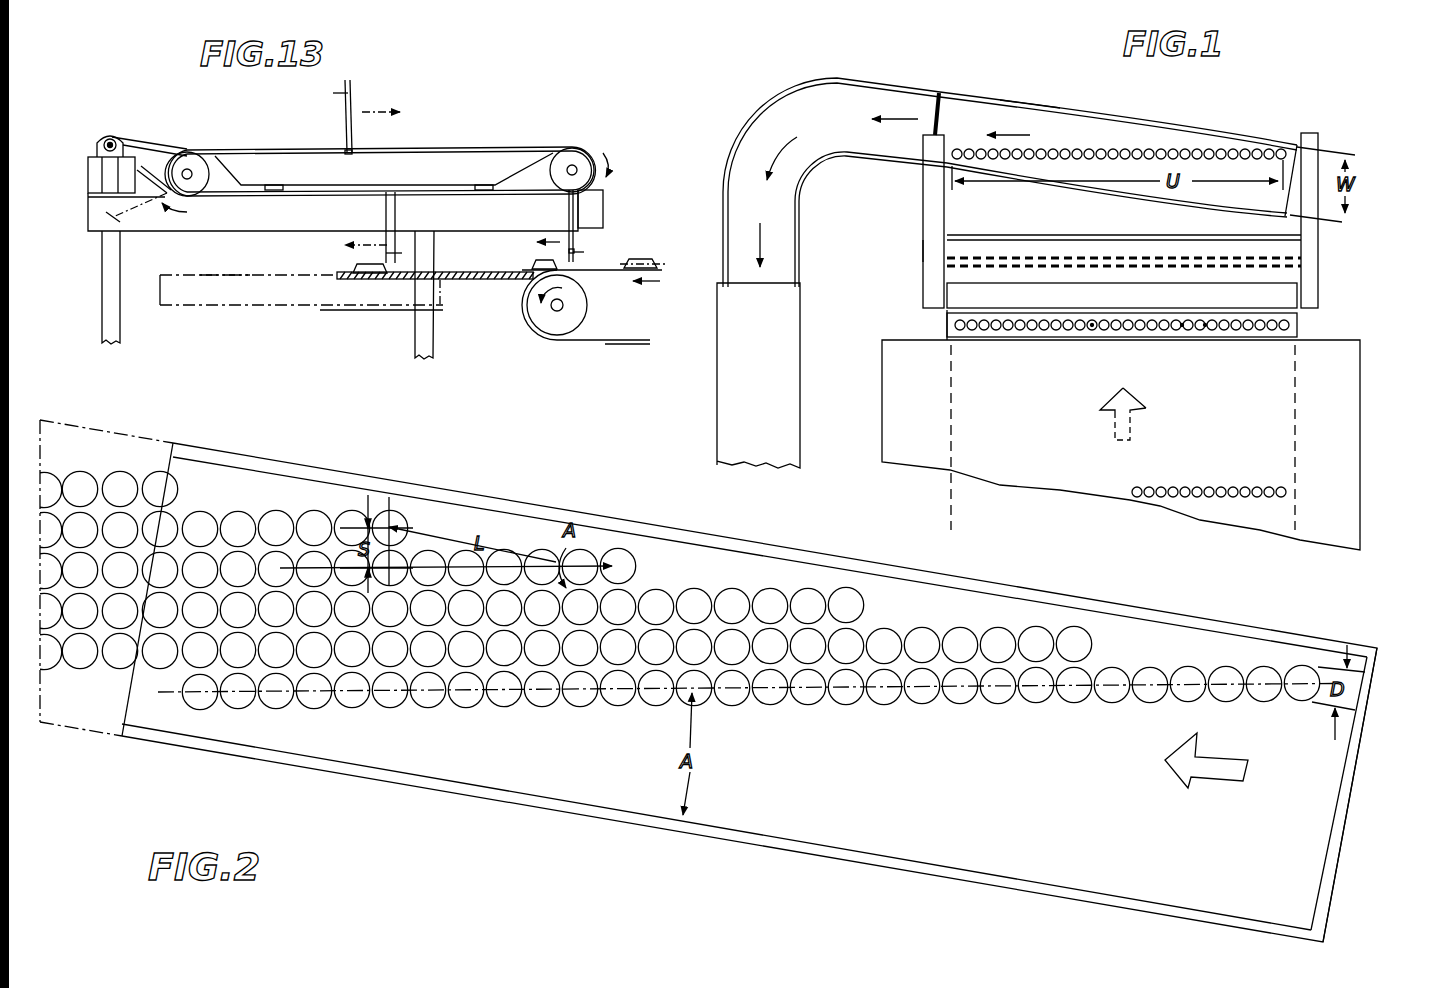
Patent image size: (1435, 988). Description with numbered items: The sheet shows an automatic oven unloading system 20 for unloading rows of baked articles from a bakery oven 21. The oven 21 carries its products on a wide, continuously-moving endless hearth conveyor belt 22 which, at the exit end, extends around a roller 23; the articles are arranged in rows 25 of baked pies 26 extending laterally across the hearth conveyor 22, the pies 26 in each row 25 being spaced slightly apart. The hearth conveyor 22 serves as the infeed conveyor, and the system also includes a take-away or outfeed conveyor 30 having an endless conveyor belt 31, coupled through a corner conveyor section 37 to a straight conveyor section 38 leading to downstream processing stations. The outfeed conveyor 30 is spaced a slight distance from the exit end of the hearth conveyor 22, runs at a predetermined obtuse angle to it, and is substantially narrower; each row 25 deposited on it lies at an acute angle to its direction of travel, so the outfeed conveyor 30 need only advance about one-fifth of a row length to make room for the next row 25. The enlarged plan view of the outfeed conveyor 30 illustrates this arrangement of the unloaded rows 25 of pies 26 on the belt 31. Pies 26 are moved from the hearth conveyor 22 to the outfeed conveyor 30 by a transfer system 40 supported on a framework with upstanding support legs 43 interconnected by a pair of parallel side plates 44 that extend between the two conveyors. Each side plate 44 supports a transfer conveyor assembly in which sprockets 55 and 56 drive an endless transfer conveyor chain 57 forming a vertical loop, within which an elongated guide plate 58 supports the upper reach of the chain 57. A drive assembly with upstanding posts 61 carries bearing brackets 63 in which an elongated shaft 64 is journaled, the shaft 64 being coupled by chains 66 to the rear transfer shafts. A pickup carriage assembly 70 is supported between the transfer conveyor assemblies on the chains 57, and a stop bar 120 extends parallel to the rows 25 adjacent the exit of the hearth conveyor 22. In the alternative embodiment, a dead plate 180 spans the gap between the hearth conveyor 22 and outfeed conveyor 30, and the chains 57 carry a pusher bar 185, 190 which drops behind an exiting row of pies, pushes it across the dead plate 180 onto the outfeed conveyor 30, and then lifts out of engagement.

In FIG. 1, the automatic oven unloading system 20 is at (900, 56).
In FIG. 1, the bakery oven 21 is at (1362, 408).
In FIG. 13, the hearth conveyor belt 22 is at (617, 340).
In FIG. 1, the hearth conveyor belt 22 is at (1298, 323).
In FIG. 13, the roller 23 is at (583, 309).
In FIG. 1, the rows of baked pies 25 is at (1098, 147).
In FIG. 2, the rows of baked pies 25 is at (1130, 660).
In FIG. 13, the baked pies 26 is at (353, 267).
In FIG. 1, the baked pies 26 is at (1203, 326).
In FIG. 2, the baked pies 26 is at (993, 702).
In FIG. 13, the outfeed conveyor 30 is at (272, 322).
In FIG. 1, the outfeed conveyor 30 is at (1190, 122).
In FIG. 2, the outfeed conveyor 30 is at (392, 837).
In FIG. 13, the endless conveyor belt 31 is at (248, 273).
In FIG. 1, the endless conveyor belt 31 is at (1022, 117).
In FIG. 2, the endless conveyor belt 31 is at (1333, 870).
In FIG. 1, the corner conveyor section 37 is at (783, 197).
In FIG. 1, the straight conveyor section 38 is at (725, 383).
In FIG. 2, the straight conveyor section 38 is at (137, 437).
In FIG. 1, the transfer system 40 is at (922, 252).
In FIG. 13, the support legs 43 is at (100, 320).
In FIG. 13, the side plates 44 is at (243, 222).
In FIG. 1, the side plates 44 is at (935, 213).
In FIG. 13, the sprocket 55 is at (565, 160).
In FIG. 13, the sprocket 56 is at (193, 163).
In FIG. 13, the transfer conveyor chain 57 is at (488, 148).
In FIG. 13, the guide plate 58 is at (430, 162).
In FIG. 13, the upstanding posts 61 is at (123, 175).
In FIG. 13, the bearing brackets 63 is at (98, 147).
In FIG. 13, the elongated shaft 64 is at (110, 139).
In FIG. 13, the chains 66 is at (147, 138).
In FIG. 1, the pickup carriage assembly 70 is at (1043, 233).
In FIG. 1, the stop bar 120 is at (947, 313).
In FIG. 13, the dead plate 180 is at (489, 280).
In FIG. 13, the pusher bar 185 is at (343, 130).
In FIG. 13, the pusher bar 190 is at (578, 253).